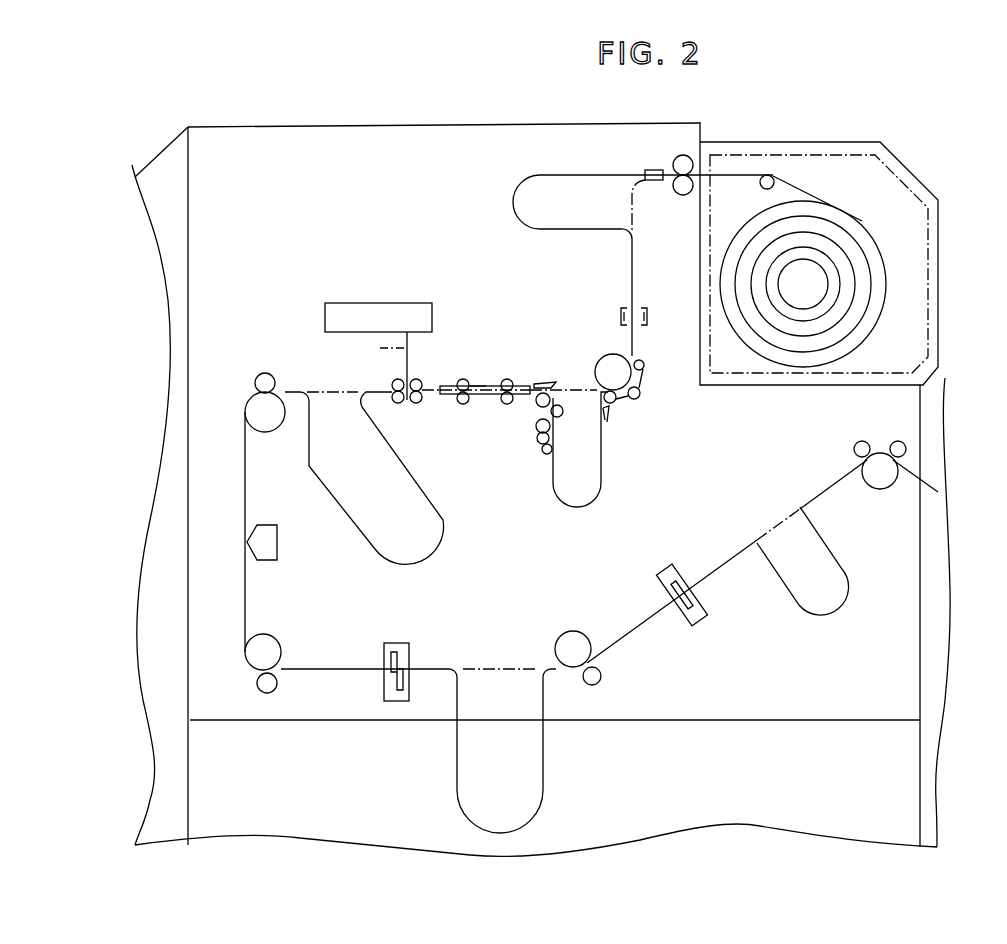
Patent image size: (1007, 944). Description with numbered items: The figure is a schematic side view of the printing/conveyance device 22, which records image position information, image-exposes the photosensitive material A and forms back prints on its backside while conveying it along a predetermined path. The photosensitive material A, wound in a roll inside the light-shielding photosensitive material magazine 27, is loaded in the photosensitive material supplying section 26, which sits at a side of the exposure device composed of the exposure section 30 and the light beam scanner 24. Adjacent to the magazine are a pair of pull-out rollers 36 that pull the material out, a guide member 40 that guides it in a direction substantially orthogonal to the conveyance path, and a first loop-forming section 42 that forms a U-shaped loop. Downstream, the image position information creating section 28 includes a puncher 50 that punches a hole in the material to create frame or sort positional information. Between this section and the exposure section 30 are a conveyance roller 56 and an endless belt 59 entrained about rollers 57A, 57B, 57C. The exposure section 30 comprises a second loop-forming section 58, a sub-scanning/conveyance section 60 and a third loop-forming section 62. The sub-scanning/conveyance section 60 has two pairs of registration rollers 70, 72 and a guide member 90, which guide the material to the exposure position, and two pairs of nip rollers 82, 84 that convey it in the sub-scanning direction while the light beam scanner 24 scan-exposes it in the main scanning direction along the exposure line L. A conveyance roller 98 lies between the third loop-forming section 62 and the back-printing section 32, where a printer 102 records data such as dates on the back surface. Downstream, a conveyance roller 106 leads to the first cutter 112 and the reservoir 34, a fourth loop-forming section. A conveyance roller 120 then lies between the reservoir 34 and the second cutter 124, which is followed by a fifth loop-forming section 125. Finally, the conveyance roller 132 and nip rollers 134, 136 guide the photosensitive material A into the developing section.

The printing/conveyance device 22 is at (328, 113).
The light beam scanner 24 is at (382, 313).
The photosensitive material supplying section 26 is at (930, 183).
The photosensitive material magazine 27 is at (798, 152).
The image position information creating section 28 is at (600, 293).
The exposure section 30 is at (485, 313).
The back-printing section 32 is at (223, 577).
The reservoir 34 is at (557, 812).
The pair of pull-out rollers 36 is at (685, 155).
The guide member 40 is at (653, 167).
The first loop-forming section 42 is at (580, 170).
The puncher 50 is at (618, 316).
The conveyance roller 56 is at (607, 371).
The roller 57A is at (643, 368).
The roller 57B is at (637, 396).
The roller 57C is at (616, 404).
The second loop-forming section 58 is at (553, 508).
The endless belt 59 is at (611, 405).
The sub-scanning/conveyance section 60 is at (468, 415).
The third loop-forming section 62 is at (447, 515).
The pair of registration rollers 70 is at (510, 380).
The pair of registration rollers 72 is at (460, 380).
The pair of nip rollers 82 is at (417, 403).
The pair of nip rollers 84 is at (397, 403).
The guide member 90 is at (477, 385).
The conveyance roller 98 is at (268, 422).
The printer 102 is at (266, 548).
The conveyance roller 106 is at (275, 652).
The first cutter 112 is at (395, 642).
The conveyance roller 120 is at (575, 645).
The second cutter 124 is at (673, 572).
The fifth loop-forming section 125 is at (833, 630).
The conveyance roller 132 is at (880, 478).
The nip roller 134 is at (856, 452).
The nip roller 136 is at (897, 441).
The photosensitive material A is at (735, 168).
The print line L is at (385, 351).